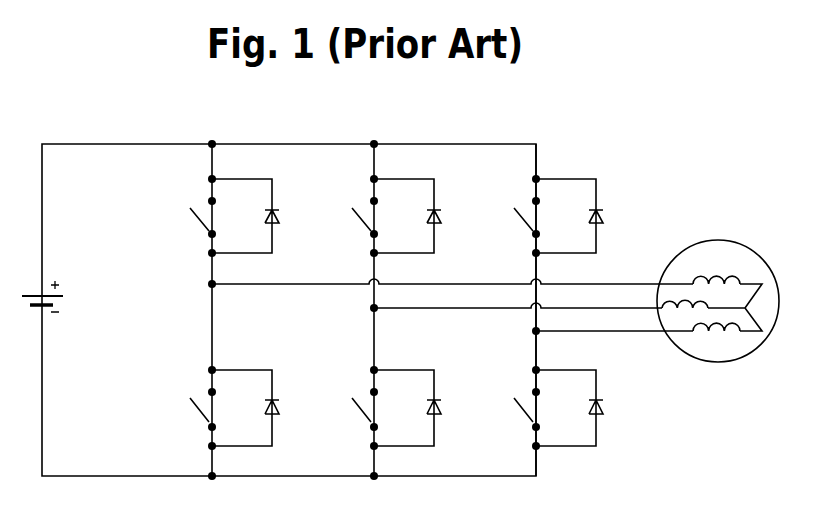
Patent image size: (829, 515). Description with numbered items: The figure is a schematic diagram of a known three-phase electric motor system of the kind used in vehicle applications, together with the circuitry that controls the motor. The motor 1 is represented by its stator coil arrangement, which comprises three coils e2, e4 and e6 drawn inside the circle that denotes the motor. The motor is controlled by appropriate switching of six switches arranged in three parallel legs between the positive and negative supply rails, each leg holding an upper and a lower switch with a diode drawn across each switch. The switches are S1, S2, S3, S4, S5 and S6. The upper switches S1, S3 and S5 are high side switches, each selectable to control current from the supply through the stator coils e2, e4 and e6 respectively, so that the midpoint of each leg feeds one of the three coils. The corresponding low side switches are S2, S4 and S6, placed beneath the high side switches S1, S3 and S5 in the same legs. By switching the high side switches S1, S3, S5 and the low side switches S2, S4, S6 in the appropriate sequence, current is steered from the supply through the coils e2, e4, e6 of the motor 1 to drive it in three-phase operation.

The electric motor 1 is at (707, 342).
The high side switch S1 is at (234, 216).
The low side switch S2 is at (234, 408).
The high side switch S3 is at (396, 216).
The low side switch S4 is at (396, 408).
The high side switch S5 is at (558, 216).
The low side switch S6 is at (558, 408).
The stator coil e2 is at (737, 273).
The stator coil e4 is at (668, 300).
The stator coil e6 is at (750, 363).